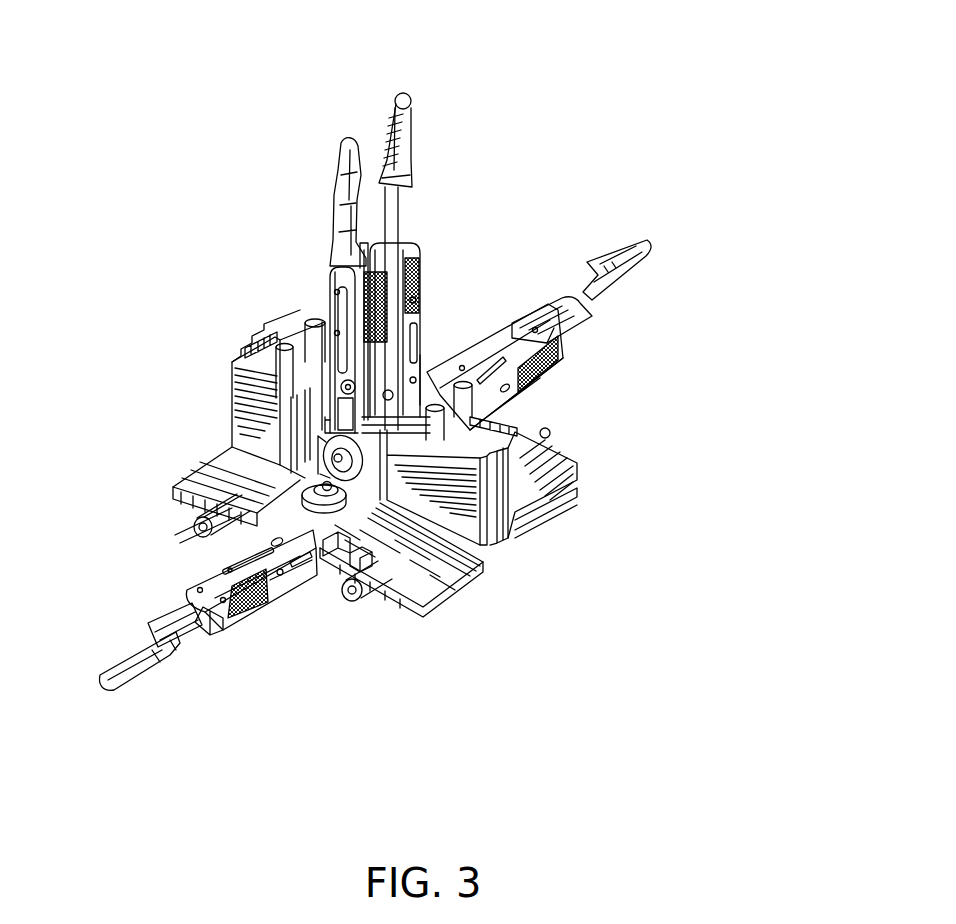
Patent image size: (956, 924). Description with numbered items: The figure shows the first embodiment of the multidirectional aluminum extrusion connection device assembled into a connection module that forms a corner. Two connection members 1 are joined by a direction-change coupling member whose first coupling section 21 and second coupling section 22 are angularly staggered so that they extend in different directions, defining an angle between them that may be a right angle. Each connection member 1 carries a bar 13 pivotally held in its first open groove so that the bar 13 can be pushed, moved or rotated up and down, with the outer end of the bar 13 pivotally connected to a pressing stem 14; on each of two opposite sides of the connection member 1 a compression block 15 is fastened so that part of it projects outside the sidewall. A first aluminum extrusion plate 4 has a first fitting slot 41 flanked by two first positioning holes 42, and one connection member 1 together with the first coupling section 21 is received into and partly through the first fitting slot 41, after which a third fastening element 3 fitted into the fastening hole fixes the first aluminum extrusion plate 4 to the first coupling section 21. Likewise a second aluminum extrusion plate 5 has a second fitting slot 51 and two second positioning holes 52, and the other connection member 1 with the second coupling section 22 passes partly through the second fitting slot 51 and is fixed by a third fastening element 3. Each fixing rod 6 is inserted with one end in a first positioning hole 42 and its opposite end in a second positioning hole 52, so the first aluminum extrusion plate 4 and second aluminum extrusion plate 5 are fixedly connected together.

The connection member 1 is at (328, 292).
The third fastening element 3 is at (335, 457).
The first aluminum extrusion plate 4 is at (456, 543).
The second aluminum extrusion plate 5 is at (503, 533).
The fixing rod 6 is at (312, 318).
The bar 13 is at (338, 272).
The pressing stem 14 is at (342, 158).
The compression block 15 is at (402, 292).
The first coupling section 21 is at (200, 468).
The second coupling section 22 is at (340, 415).
The first fitting slot 41 is at (322, 578).
The first positioning hole 42 is at (373, 583).
The second fitting slot 51 is at (425, 368).
The second positioning hole 52 is at (497, 410).